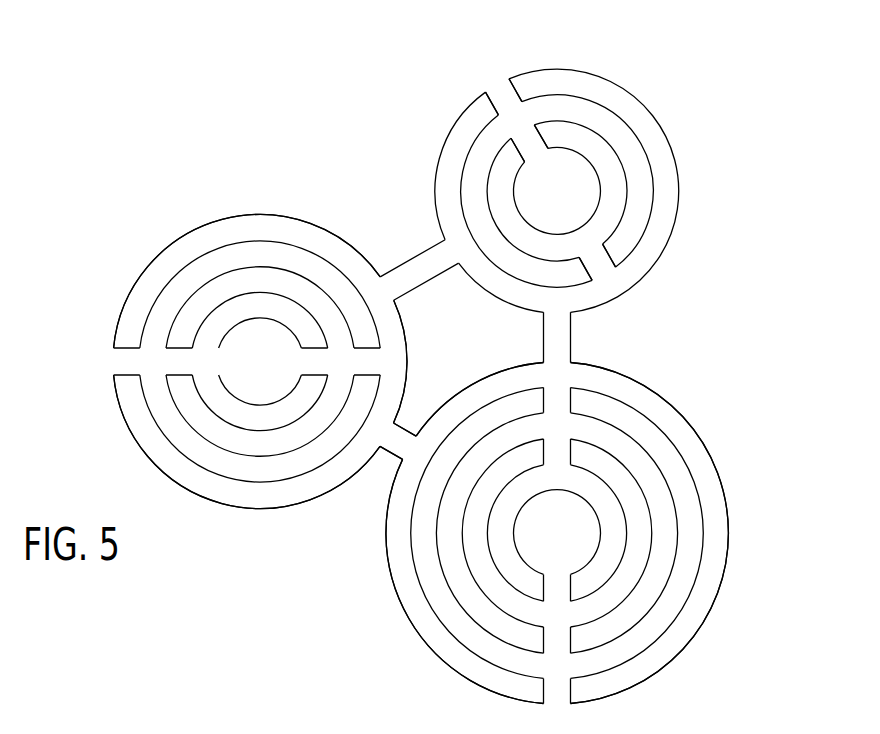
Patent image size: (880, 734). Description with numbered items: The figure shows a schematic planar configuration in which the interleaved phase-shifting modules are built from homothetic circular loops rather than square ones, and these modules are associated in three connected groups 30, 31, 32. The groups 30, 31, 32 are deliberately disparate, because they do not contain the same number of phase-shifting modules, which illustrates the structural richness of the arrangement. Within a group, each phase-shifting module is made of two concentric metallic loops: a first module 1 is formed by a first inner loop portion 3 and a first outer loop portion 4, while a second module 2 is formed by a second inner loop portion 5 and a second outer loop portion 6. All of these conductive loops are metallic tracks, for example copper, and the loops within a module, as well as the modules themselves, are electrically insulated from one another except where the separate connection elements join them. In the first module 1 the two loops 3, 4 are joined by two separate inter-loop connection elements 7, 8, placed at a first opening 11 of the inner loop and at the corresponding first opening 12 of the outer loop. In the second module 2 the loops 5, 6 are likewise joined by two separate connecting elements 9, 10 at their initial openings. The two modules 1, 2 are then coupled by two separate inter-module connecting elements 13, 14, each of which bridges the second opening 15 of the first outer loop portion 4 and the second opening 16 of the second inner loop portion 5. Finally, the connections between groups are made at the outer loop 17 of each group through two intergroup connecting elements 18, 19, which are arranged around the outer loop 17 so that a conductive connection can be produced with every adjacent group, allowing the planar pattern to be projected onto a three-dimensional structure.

The first module 1 is at (606, 165).
The second module 2 is at (545, 190).
The first inner loop portion 3 is at (612, 203).
The first outer loop portion 4 is at (536, 191).
The second inner loop portion 5 is at (460, 206).
The second outer loop portion 6 is at (432, 155).
The inter-loop connection element 7 is at (506, 152).
The inter-loop connection element 8 is at (545, 130).
The connecting element 9 is at (488, 105).
The connecting element 10 is at (515, 80).
The first opening 11 is at (529, 143).
The first opening 12 is at (502, 96).
The inter-module connecting element 13 is at (612, 252).
The inter-module connecting element 14 is at (578, 270).
The second opening 15 is at (588, 248).
The second opening 16 is at (603, 275).
The outer loop 17 is at (384, 560).
The intergroup connecting element 18 is at (388, 457).
The intergroup connecting element 19 is at (405, 432).
The connected group 30 is at (545, 187).
The connected group 31 is at (738, 540).
The connected group 32 is at (117, 422).